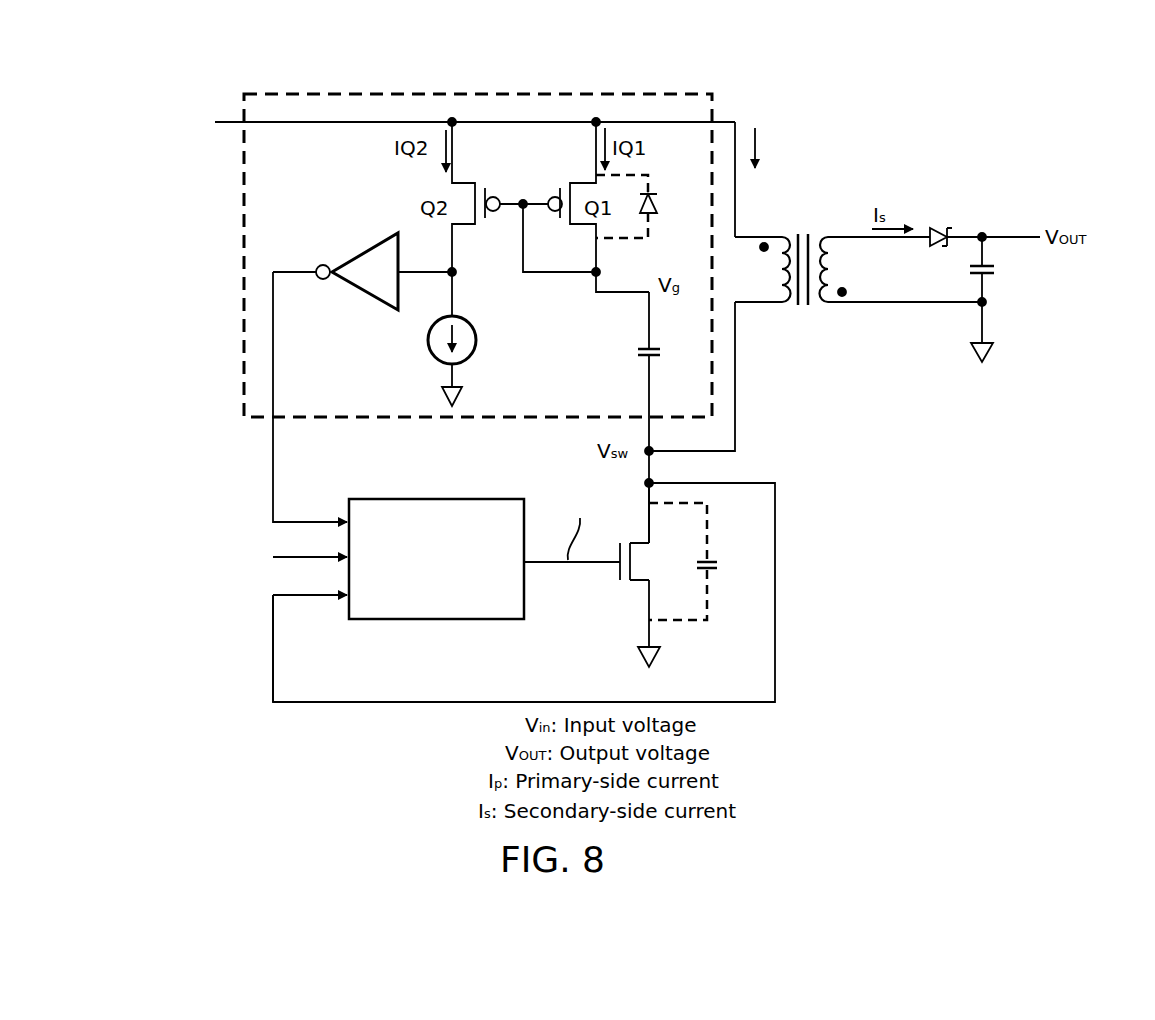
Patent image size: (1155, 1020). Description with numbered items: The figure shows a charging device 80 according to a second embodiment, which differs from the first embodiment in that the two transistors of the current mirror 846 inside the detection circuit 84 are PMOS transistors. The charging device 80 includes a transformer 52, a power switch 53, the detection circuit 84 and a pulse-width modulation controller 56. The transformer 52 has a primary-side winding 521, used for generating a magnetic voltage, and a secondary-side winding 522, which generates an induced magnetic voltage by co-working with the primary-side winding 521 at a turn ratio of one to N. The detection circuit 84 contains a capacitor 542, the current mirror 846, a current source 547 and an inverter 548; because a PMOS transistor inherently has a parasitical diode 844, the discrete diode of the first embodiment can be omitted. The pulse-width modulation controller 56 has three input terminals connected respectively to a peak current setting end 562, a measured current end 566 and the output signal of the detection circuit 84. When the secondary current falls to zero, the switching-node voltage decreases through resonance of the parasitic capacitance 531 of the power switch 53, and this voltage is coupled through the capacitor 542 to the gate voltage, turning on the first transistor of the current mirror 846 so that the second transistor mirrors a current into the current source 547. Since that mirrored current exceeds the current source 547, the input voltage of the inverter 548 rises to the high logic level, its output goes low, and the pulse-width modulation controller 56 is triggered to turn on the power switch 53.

The charging device 80 is at (1040, 155).
The detection circuit 84 is at (243, 352).
The inverter 548 is at (375, 245).
The current source 547 is at (428, 345).
The parasitical diode 844 is at (652, 212).
The current mirror 846 is at (536, 292).
The capacitor 542 is at (636, 360).
The transformer 52 is at (795, 267).
The primary-side winding 521 is at (763, 269).
The secondary-side winding 522 is at (901, 269).
The pulse-width modulation controller 56 is at (430, 620).
The peak current setting end 562 is at (300, 560).
The measured current end 566 is at (273, 643).
The power switch 53 is at (640, 585).
The parasitic capacitance 531 is at (704, 561).